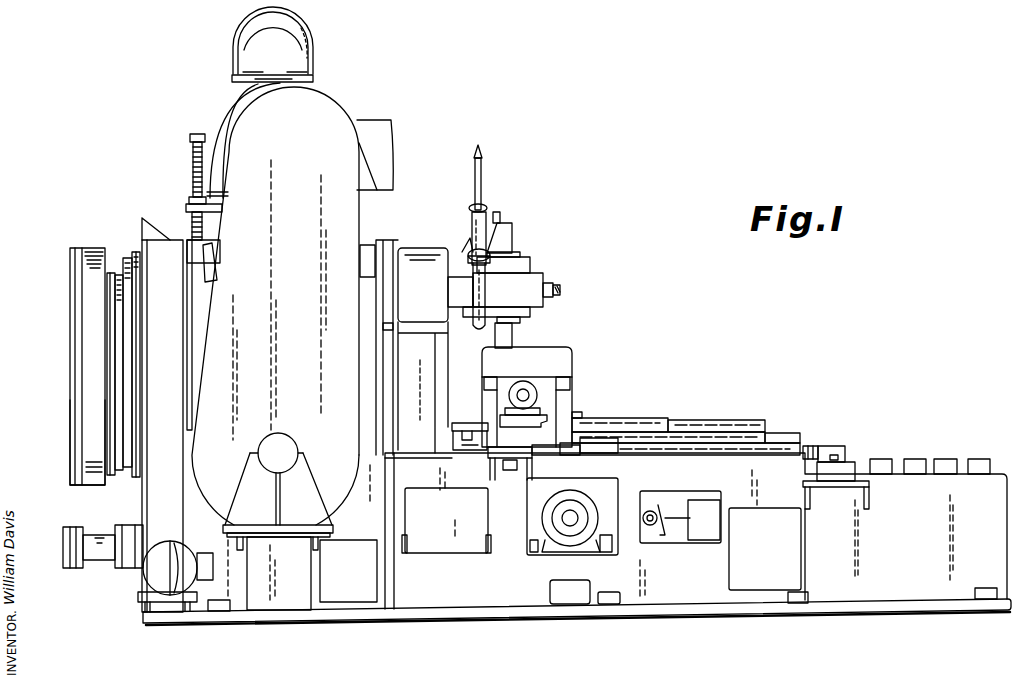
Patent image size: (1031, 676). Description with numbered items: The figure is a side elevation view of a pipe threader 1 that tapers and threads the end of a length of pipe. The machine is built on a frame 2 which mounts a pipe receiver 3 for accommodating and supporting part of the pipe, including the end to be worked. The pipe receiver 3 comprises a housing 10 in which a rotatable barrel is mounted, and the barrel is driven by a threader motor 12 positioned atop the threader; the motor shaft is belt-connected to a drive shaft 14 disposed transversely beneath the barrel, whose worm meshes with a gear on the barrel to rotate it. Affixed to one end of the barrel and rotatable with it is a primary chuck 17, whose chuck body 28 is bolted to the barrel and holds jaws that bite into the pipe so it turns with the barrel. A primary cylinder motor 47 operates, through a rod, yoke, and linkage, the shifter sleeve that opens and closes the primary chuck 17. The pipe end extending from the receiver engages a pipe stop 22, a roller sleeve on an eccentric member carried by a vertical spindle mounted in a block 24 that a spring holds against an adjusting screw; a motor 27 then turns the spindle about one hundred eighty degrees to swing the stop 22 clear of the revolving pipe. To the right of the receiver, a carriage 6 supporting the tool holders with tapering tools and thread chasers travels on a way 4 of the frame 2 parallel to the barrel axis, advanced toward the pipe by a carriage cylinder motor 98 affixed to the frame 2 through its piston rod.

The pipe threader 1 is at (407, 226).
The frame 2 is at (988, 472).
The pipe receiver 3 is at (142, 243).
The way 4 is at (766, 433).
The carriage 6 is at (573, 363).
The housing 10 is at (169, 240).
The threader motor 12 is at (222, 110).
The drive shaft 14 is at (290, 448).
The primary chuck 17 is at (68, 272).
The pipe stop 22 is at (518, 330).
The block 24 is at (528, 268).
The motor 27 is at (512, 231).
The chuck body 28 is at (70, 420).
The primary cylinder motor 47 is at (107, 566).
The carriage cylinder motor 98 is at (826, 445).